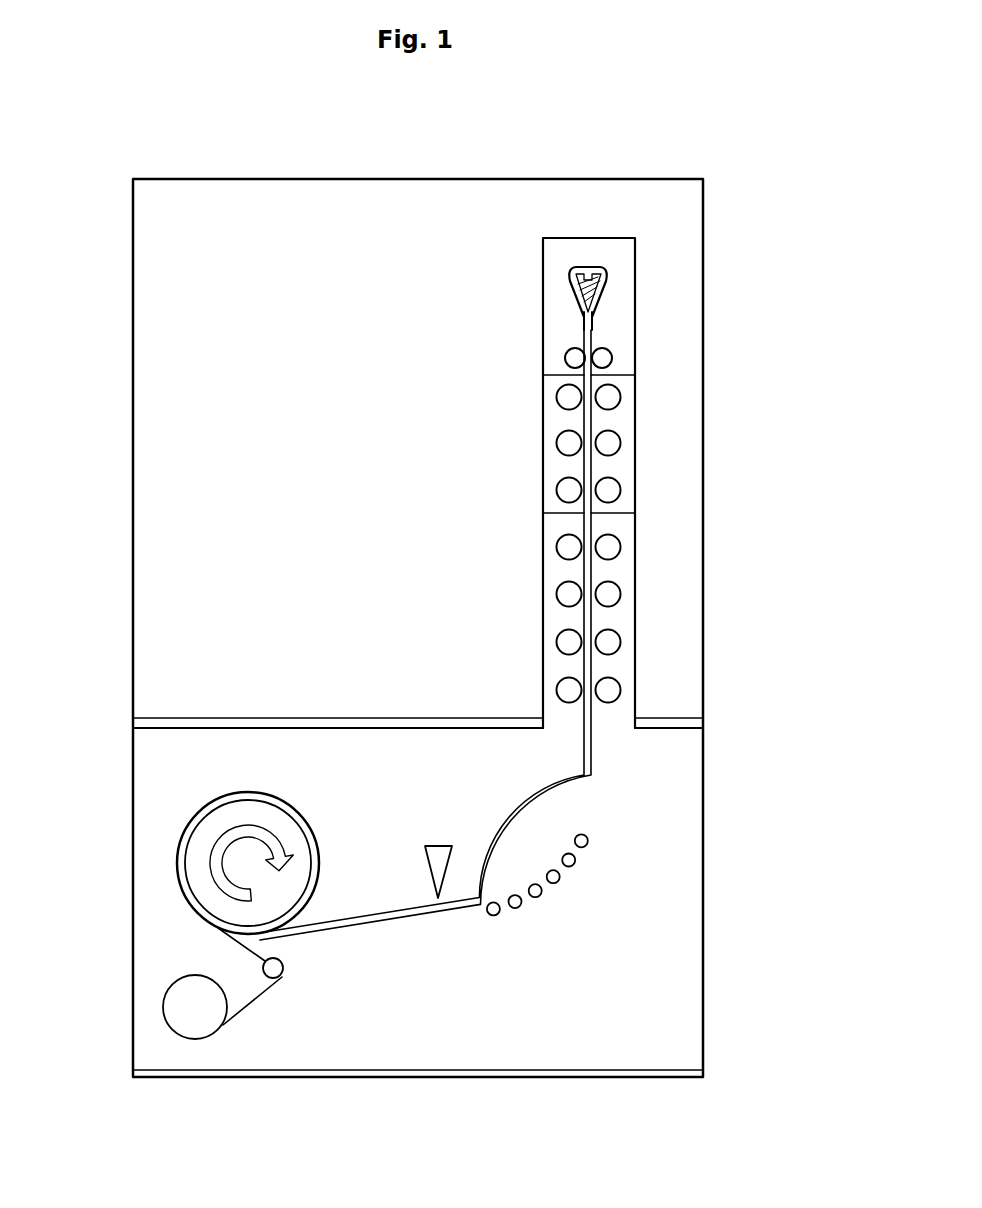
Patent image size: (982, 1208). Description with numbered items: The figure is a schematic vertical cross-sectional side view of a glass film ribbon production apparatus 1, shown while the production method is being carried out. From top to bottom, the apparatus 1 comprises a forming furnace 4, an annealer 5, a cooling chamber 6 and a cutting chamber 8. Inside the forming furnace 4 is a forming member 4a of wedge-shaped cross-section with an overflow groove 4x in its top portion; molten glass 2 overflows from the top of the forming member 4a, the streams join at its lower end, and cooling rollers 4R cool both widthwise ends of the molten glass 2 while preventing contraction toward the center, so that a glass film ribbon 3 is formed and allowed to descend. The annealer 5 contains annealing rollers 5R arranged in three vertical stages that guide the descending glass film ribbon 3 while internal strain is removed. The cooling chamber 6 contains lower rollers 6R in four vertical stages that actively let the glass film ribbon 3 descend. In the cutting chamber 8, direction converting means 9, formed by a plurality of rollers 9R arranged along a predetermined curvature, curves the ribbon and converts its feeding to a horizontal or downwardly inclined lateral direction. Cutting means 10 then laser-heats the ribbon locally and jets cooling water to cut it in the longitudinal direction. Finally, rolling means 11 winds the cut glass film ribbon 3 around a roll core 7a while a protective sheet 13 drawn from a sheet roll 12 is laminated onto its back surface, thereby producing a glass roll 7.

The glass film ribbon production apparatus 1 is at (727, 215).
The molten glass 2 is at (596, 313).
The glass film ribbon 3 is at (584, 377).
The forming furnace 4 is at (548, 318).
The forming member 4a is at (580, 292).
The overflow groove 4x is at (588, 276).
The cooling rollers 4R is at (575, 356).
The annealer 5 is at (548, 428).
The annealing rollers 5R is at (569, 397).
The cooling chamber 6 is at (548, 575).
The lower rollers 6R is at (569, 547).
The glass roll 7 is at (300, 805).
The roll core 7a is at (186, 870).
The cutting chamber 8 is at (395, 745).
The direction converting means 9 is at (572, 882).
The rollers 9R is at (571, 861).
The cutting means 10 is at (440, 843).
The rolling means 11 is at (190, 805).
The sheet roll 12 is at (176, 1003).
The protective sheet 13 is at (245, 944).